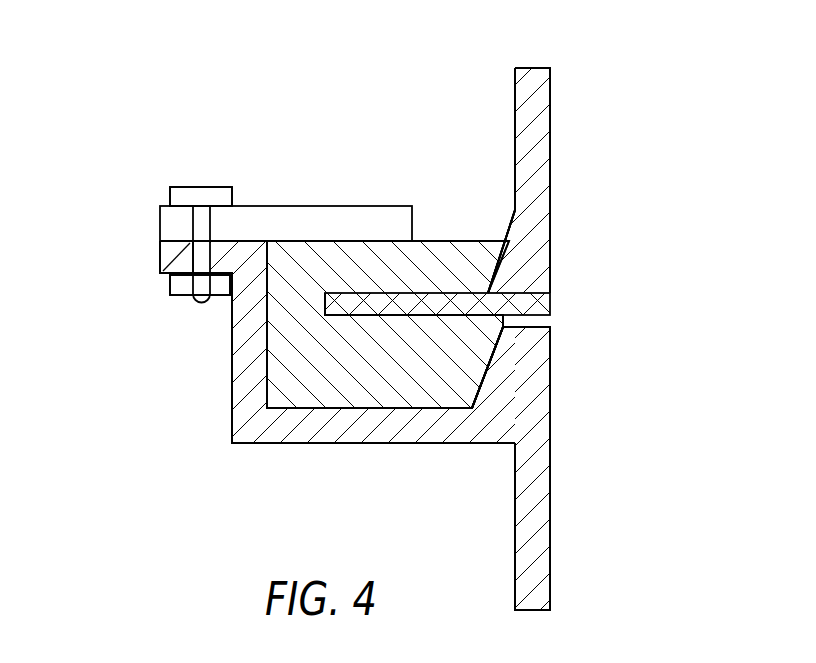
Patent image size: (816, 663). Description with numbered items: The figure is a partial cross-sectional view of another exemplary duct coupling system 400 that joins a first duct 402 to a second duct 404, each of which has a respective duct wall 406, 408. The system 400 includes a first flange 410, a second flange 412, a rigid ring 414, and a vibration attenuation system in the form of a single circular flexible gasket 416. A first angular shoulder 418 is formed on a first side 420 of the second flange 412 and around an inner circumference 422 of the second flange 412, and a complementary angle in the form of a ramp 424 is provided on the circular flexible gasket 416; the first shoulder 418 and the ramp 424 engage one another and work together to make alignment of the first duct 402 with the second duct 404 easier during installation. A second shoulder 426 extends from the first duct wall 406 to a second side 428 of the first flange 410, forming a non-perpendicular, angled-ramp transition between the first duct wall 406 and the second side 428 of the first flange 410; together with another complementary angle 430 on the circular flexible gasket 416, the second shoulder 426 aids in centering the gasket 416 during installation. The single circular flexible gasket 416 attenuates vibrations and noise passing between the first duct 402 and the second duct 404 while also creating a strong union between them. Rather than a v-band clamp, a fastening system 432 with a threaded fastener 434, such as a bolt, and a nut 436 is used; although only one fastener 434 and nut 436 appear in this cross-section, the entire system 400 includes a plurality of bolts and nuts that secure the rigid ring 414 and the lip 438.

The duct coupling system 400 is at (150, 96).
The first duct 402 is at (622, 132).
The second duct 404 is at (572, 575).
The first duct wall 406 is at (552, 190).
The second duct wall 408 is at (552, 537).
The first flange 410 is at (485, 372).
The second flange 412 is at (427, 443).
The rigid ring 414 is at (294, 205).
The circular flexible gasket 416 is at (351, 280).
The first angular shoulder 418 is at (480, 396).
The first side 420 is at (307, 396).
The inner circumference 422 is at (466, 392).
The ramp 424 is at (473, 372).
The second shoulder 426 is at (500, 278).
The second side 428 is at (390, 286).
The complimentary angle 430 is at (498, 266).
The fastening system 432 is at (167, 170).
The threaded fastener 434 is at (203, 186).
The nut 436 is at (170, 285).
The lip 438 is at (160, 260).